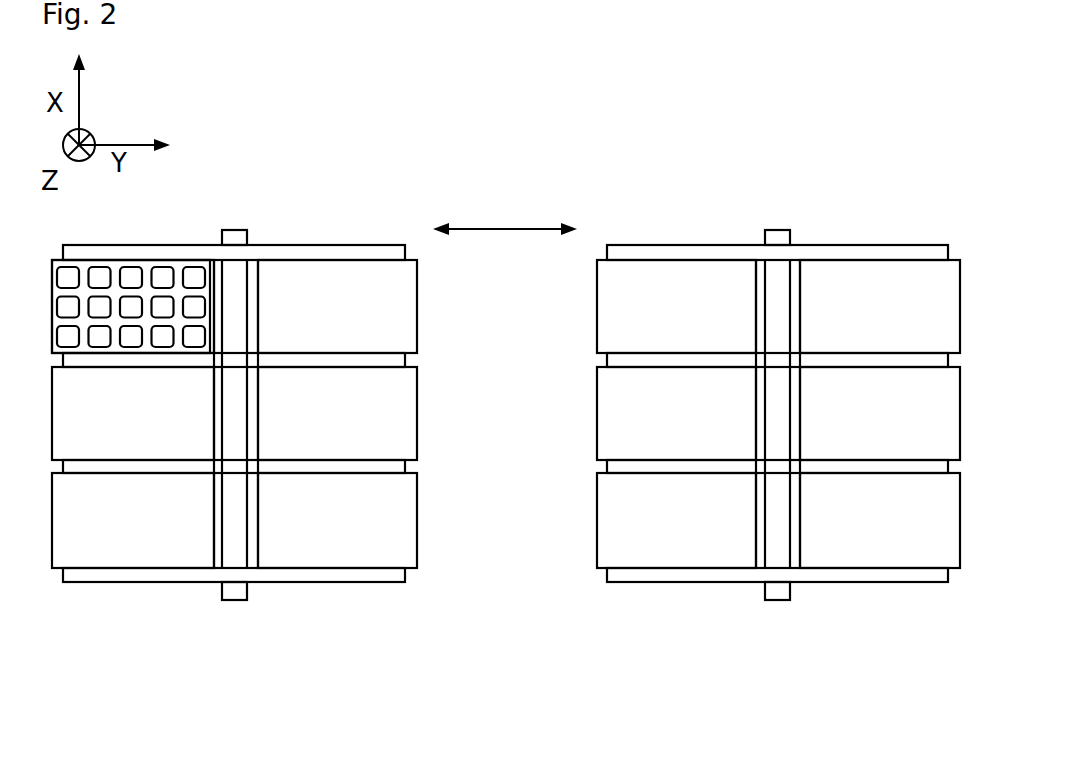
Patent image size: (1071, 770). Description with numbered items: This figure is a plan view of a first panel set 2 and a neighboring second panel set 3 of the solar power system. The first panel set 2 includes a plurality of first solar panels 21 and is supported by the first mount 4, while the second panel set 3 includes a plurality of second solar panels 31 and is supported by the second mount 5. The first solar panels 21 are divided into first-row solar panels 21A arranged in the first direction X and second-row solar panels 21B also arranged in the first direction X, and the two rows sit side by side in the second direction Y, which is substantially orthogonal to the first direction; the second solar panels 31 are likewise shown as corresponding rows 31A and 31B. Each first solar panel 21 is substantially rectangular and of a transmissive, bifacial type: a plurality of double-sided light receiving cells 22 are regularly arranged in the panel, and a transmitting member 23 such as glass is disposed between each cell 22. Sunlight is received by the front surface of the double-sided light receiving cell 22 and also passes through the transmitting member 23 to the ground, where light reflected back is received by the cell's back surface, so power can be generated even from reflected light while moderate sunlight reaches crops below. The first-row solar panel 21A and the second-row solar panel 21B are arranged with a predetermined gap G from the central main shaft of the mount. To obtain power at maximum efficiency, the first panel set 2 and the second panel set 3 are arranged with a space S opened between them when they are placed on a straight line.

The first panel set 2 is at (330, 206).
The second panel set 3 is at (873, 207).
The first mount 4 is at (230, 602).
The second mount 5 is at (767, 607).
The first solar panel 21 is at (234, 453).
The first-row solar panel 21A is at (90, 547).
The second-row solar panel 21B is at (318, 548).
The double-sided light receiving cell 22 is at (160, 262).
The transmitting member 23 is at (180, 262).
The second solar panel 31 is at (779, 453).
The first-row solar panel of the second panel set 31A is at (637, 548).
The second-row solar panel of the second panel set 31B is at (878, 547).
The gap G is at (255, 560).
The space S is at (505, 209).